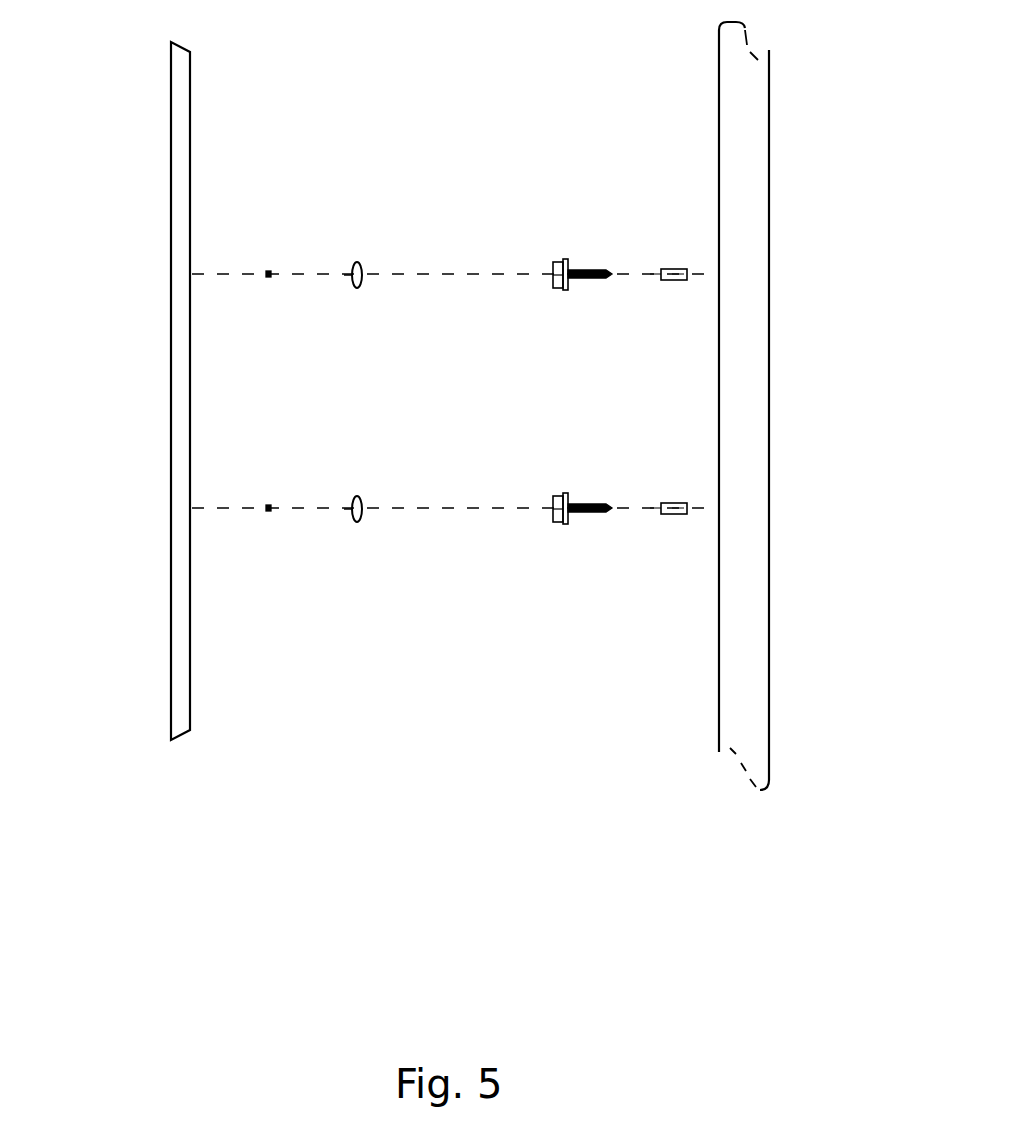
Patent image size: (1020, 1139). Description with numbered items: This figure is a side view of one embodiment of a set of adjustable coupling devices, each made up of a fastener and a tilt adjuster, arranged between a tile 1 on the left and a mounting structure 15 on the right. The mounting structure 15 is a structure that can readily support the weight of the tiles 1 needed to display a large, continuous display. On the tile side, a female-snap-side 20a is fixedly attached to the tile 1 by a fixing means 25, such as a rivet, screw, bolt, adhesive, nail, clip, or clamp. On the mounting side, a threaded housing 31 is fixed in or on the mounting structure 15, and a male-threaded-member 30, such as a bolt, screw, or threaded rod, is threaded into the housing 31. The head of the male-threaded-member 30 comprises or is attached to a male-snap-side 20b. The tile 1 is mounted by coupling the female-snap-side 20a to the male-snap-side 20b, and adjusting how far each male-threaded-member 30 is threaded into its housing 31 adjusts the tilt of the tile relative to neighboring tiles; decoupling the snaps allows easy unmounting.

The tile 1 is at (157, 60).
The mounting structure 15 is at (782, 675).
The female-snap-side 20a is at (357, 249).
The male-snap-side 20b is at (558, 249).
The fixing means 25 is at (268, 265).
The male-threaded-member 30 is at (583, 296).
The threaded housing 31 is at (675, 287).